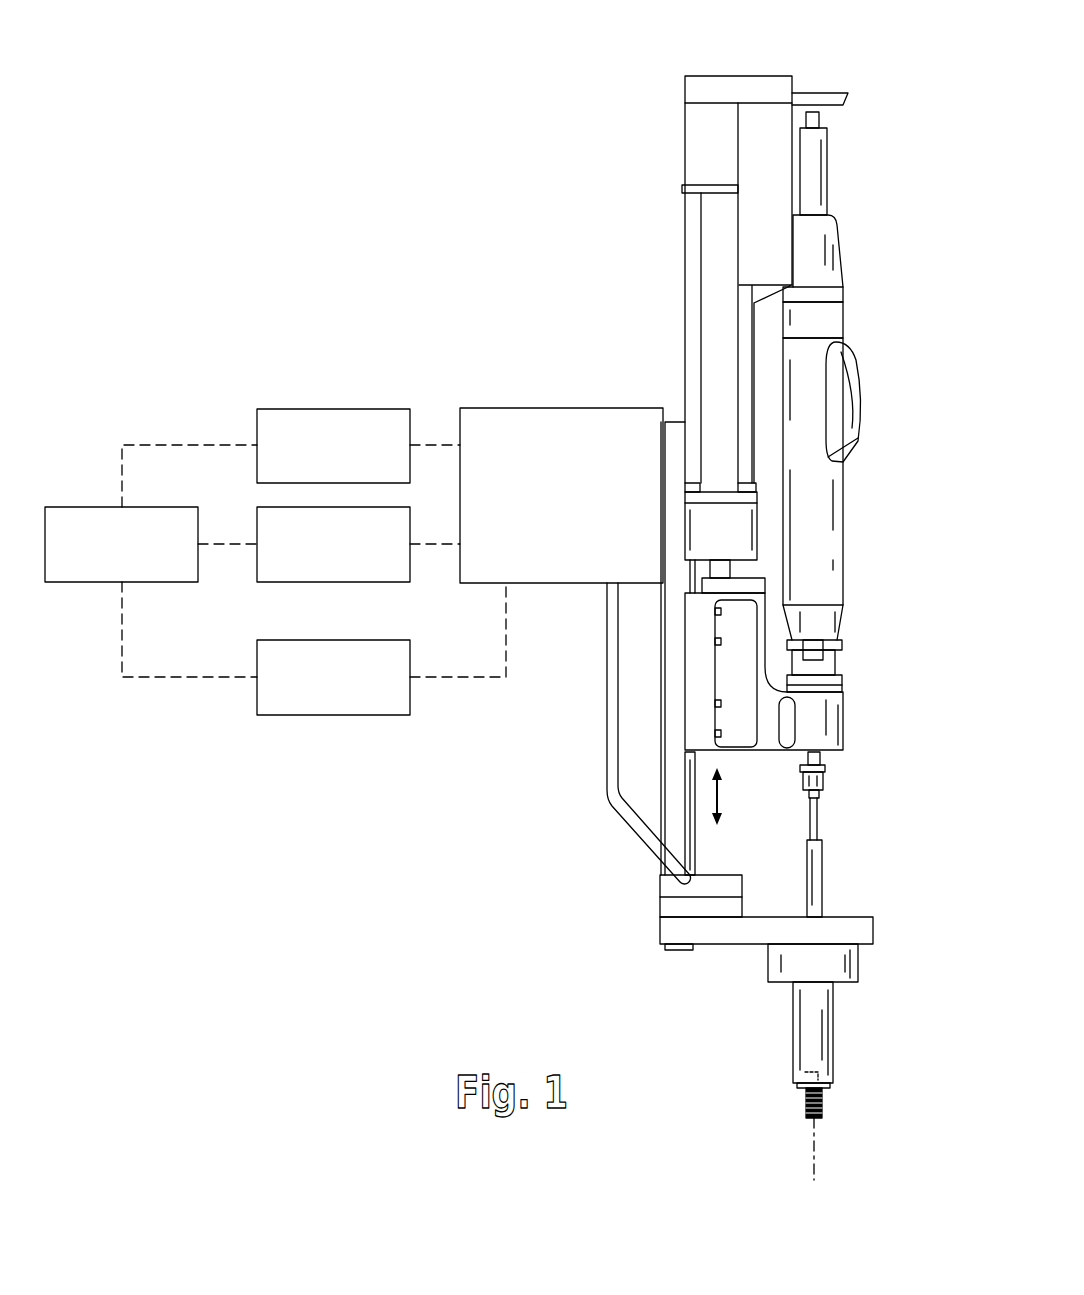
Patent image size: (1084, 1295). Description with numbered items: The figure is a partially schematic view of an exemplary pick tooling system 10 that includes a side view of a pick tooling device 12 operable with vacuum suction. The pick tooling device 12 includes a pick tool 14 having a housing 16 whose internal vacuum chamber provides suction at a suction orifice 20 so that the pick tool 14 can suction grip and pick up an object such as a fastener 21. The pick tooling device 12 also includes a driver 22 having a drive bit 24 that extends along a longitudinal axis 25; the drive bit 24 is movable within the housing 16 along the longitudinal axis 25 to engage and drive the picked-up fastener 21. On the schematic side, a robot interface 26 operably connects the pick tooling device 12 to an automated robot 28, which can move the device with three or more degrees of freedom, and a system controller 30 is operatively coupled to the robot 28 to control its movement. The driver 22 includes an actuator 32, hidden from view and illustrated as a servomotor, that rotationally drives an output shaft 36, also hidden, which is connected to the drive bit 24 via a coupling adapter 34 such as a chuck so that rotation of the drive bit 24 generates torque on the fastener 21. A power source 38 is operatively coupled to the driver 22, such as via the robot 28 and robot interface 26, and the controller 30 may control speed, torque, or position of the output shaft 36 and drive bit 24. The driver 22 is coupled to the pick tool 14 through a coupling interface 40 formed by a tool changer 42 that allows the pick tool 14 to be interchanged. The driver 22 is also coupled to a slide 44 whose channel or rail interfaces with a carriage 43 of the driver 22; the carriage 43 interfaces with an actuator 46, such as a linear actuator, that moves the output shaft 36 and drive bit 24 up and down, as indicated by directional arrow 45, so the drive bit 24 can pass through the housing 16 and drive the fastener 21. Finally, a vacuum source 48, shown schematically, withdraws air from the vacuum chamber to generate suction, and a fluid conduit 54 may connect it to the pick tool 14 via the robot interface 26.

The pick tooling system 10 is at (237, 202).
The pick tooling device 12 is at (873, 87).
The pick tool 14 is at (888, 923).
The housing 16 is at (858, 965).
The suction orifice 20 is at (817, 1082).
The fastener 21 is at (820, 1102).
The driver 22 is at (667, 272).
The drive bit 24 is at (822, 875).
The longitudinal axis 25 is at (812, 1150).
The robot interface 26 is at (579, 511).
The robot 28 is at (350, 462).
The system controller 30 is at (138, 558).
The actuator 32 is at (818, 320).
The coupling adapter 34 is at (827, 775).
The output shaft 36 is at (815, 567).
The power source 38 is at (350, 558).
The coupling interface 40 is at (663, 895).
The tool changer 42 is at (647, 873).
The carriage 43 is at (728, 688).
The slide 44 is at (695, 833).
The directional arrow 45 is at (718, 800).
The actuator 46 is at (720, 342).
The vacuum source 48 is at (350, 692).
The fluid conduit 54 is at (607, 730).